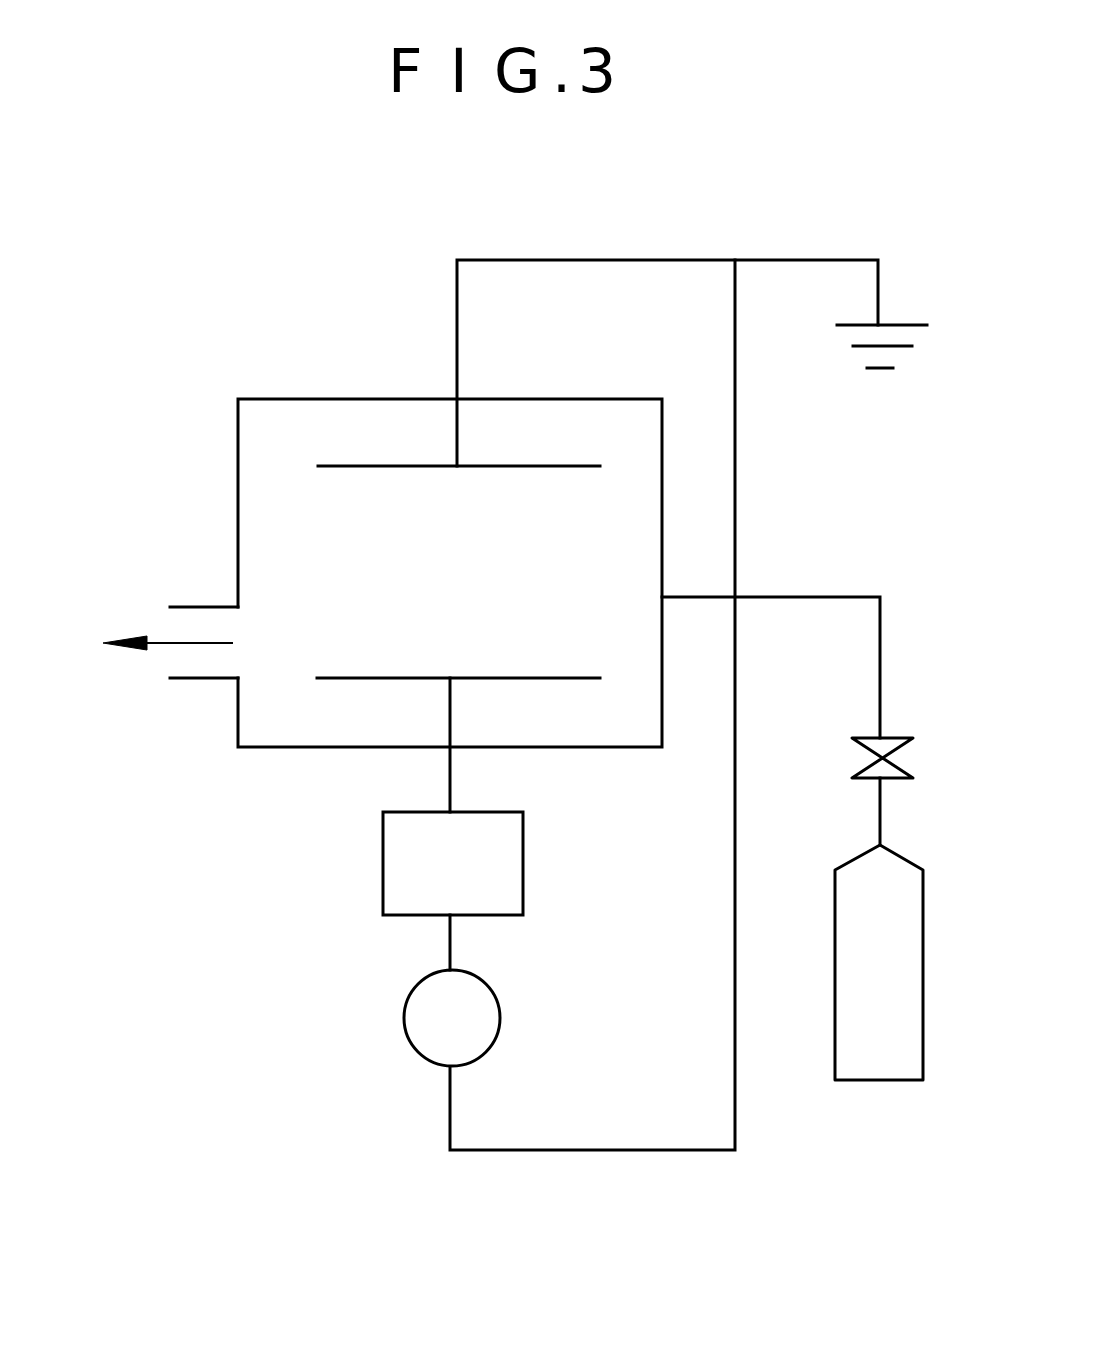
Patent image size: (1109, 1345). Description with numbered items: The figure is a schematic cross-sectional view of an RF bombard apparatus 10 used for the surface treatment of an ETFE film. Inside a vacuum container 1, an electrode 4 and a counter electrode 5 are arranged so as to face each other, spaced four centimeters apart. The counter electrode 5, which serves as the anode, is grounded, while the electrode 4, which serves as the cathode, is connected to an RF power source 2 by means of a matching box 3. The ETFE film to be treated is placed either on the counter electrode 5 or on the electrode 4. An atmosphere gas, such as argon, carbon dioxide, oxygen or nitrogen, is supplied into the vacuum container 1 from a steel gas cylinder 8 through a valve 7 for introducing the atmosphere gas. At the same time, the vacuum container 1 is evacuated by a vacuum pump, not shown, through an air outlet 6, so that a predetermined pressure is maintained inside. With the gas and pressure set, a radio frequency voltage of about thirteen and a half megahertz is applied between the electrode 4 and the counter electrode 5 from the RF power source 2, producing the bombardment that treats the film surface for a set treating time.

The RF bombard apparatus 10 is at (349, 324).
The vacuum container 1 is at (238, 446).
The RF power source 2 is at (500, 1006).
The matching box 3 is at (523, 850).
The electrode 4 is at (333, 678).
The counter electrode 5 is at (333, 466).
The air outlet 6 is at (185, 607).
The valve 7 is at (895, 778).
The steel gas cylinder 8 is at (879, 962).